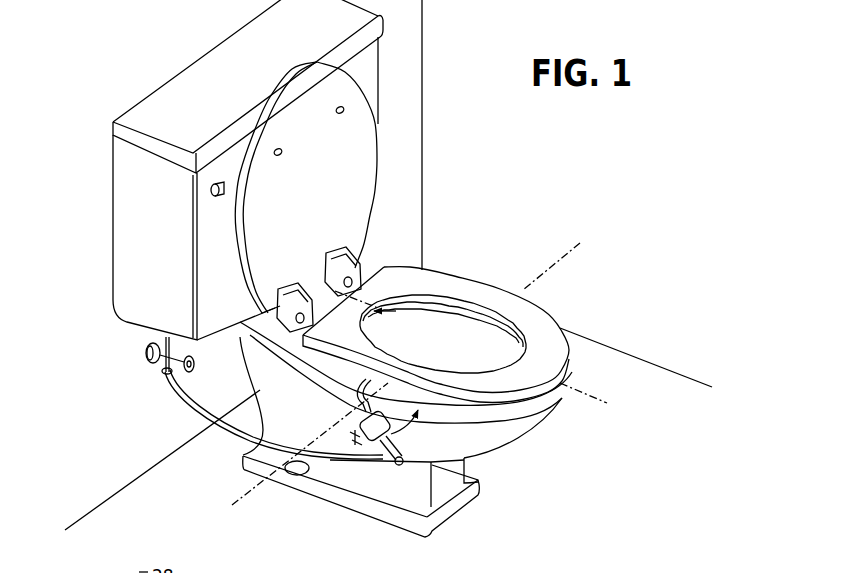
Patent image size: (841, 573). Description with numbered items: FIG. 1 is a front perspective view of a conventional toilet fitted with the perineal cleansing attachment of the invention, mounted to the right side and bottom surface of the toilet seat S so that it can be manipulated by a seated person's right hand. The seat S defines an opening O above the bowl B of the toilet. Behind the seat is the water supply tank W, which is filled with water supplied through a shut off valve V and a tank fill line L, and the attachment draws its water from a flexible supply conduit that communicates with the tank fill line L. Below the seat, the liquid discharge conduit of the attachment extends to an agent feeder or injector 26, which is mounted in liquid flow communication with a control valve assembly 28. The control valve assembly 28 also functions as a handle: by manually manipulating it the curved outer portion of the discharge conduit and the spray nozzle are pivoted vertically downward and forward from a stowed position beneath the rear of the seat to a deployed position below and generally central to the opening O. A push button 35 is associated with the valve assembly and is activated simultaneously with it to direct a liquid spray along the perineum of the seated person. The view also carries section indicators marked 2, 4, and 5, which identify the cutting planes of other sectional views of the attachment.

The water supply tank W is at (133, 191).
The tank fill line L is at (148, 340).
The shut off valve V is at (163, 372).
The toilet seat S is at (547, 330).
The opening O is at (445, 327).
The bowl B is at (487, 432).
The agent feeder or injector 26 is at (392, 412).
The control valve assembly 28 is at (387, 468).
The section line 2- 2 is at (555, 274).
The section line 4- 4 is at (357, 297).
The section line 5- 5 is at (574, 261).
The push button 35 is at (76, 570).